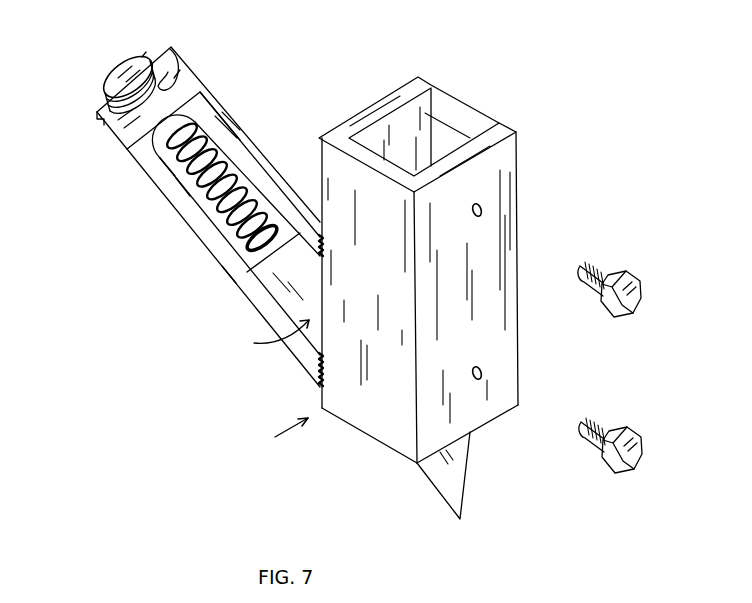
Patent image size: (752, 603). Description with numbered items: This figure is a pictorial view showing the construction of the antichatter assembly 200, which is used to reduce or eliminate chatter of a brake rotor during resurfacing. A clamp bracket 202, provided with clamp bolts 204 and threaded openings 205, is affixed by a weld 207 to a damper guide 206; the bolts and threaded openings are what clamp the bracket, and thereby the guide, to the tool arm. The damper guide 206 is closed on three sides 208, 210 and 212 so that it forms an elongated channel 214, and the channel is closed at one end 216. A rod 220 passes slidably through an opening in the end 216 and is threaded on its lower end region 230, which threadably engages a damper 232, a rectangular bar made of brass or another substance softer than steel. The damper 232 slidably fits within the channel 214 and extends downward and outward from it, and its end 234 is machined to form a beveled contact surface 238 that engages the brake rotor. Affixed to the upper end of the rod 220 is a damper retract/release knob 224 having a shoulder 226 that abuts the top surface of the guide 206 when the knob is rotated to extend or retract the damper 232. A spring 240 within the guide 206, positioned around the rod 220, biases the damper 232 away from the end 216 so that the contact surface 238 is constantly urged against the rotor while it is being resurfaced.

The antichatter assembly 200 is at (271, 433).
The clamp bracket 202 is at (519, 373).
The clamp bolts 204 is at (642, 296).
The threaded openings 205 is at (482, 205).
The damper guide 206 is at (237, 292).
The weld 207 is at (321, 238).
The side 208 is at (200, 243).
The side 210 is at (223, 112).
The side 212 is at (97, 110).
The elongated channel 214 is at (233, 155).
The end 216 is at (97, 121).
The rod 220 is at (168, 178).
The damper retract/release knob 224 is at (143, 57).
The shoulder 226 is at (174, 78).
The lower end region 230 is at (231, 275).
The damper 232 is at (261, 338).
The end 234 is at (446, 500).
The beveled contact surface 238 is at (168, 70).
The spring 240 is at (188, 210).